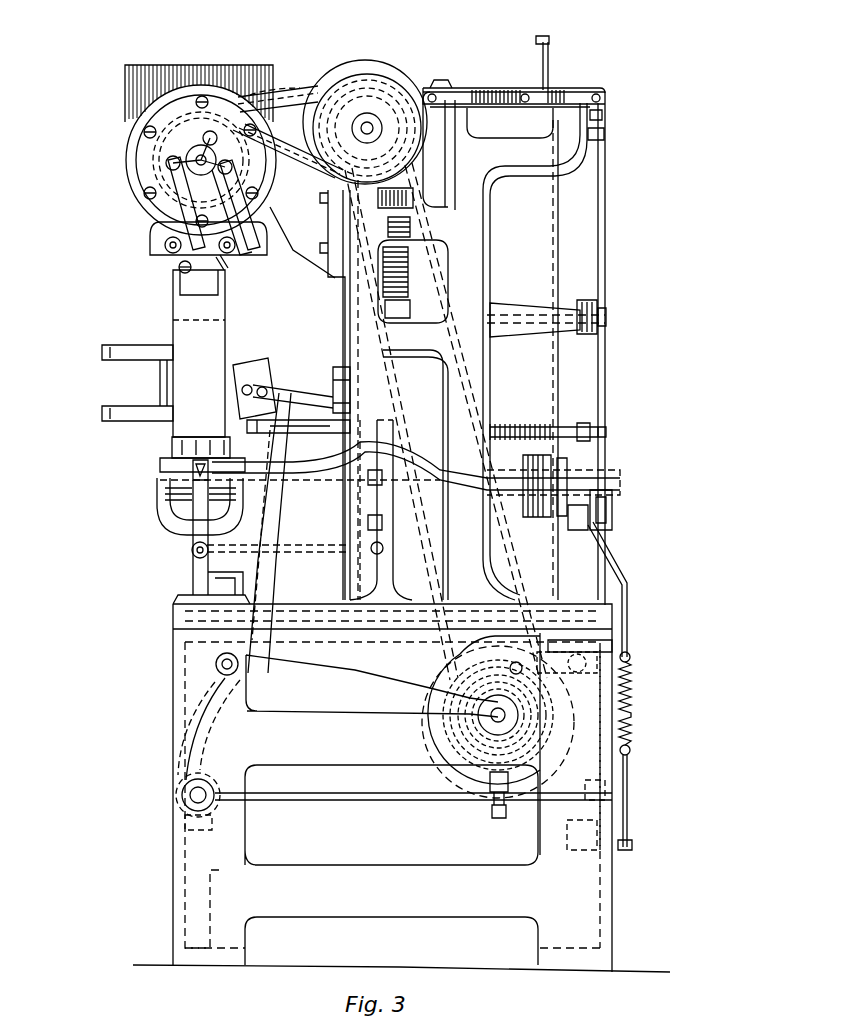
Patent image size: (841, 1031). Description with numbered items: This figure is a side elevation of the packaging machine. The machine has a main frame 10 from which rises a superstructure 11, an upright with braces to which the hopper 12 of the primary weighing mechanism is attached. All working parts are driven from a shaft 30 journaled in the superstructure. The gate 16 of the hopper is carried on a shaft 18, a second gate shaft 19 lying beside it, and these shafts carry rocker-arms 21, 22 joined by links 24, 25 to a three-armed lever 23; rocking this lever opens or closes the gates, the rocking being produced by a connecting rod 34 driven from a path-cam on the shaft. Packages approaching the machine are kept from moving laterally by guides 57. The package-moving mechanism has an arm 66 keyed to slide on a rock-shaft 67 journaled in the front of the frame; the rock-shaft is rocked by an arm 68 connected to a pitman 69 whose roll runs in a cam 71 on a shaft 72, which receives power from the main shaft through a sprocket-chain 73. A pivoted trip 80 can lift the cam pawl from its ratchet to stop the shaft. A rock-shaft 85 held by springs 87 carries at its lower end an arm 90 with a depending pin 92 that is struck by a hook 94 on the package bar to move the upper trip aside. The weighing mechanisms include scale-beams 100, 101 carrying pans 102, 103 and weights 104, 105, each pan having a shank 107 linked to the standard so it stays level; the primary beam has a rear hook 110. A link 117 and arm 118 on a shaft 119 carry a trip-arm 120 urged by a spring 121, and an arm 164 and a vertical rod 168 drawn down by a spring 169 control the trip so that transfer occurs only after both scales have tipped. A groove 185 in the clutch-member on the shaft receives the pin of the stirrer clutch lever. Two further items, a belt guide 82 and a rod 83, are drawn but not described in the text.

The main frame 10 is at (217, 897).
The superstructure 11 is at (465, 228).
The hopper 12 is at (125, 82).
The gate 16 is at (222, 262).
The shaft 18 is at (240, 250).
The shaft 19 is at (165, 241).
The rocker-arm 21 is at (250, 238).
The rocker-arm 22 is at (173, 258).
The three-armed lever 23 is at (200, 147).
The link 24 is at (270, 208).
The link 25 is at (163, 205).
The shaft 30 is at (366, 126).
The connecting rod 34 is at (293, 123).
The guides 57 is at (105, 347).
The arm 66 is at (273, 578).
The rock-shaft 67 is at (198, 795).
The arm 68 is at (213, 672).
The pitman 69 is at (318, 666).
The cam 71 is at (448, 740).
The shaft 72 is at (500, 716).
The sprocket-chain 73 is at (384, 641).
The trip 80 is at (630, 645).
The belt guide 82 is at (290, 93).
The rod 83 is at (375, 801).
The rock-shaft 85 is at (387, 318).
The springs 87 is at (380, 277).
The arm 90 is at (340, 368).
The pin 92 is at (318, 396).
The hook 94 is at (312, 383).
The scale-beam 100 is at (317, 467).
The scale-beam 101 is at (508, 495).
The pan 102 is at (157, 468).
The pan 103 is at (300, 526).
The weight 104 is at (538, 515).
The weight 105 is at (382, 500).
The shank 107 is at (203, 513).
The hook 110 is at (582, 510).
The link 117 is at (595, 140).
The arm 118 is at (603, 119).
The shaft 119 is at (522, 88).
The trip-arm 120 is at (420, 103).
The spring 121 is at (497, 88).
The arm 164 is at (550, 64).
The rod 168 is at (575, 274).
The spring 169 is at (633, 703).
The groove 185 is at (548, 40).